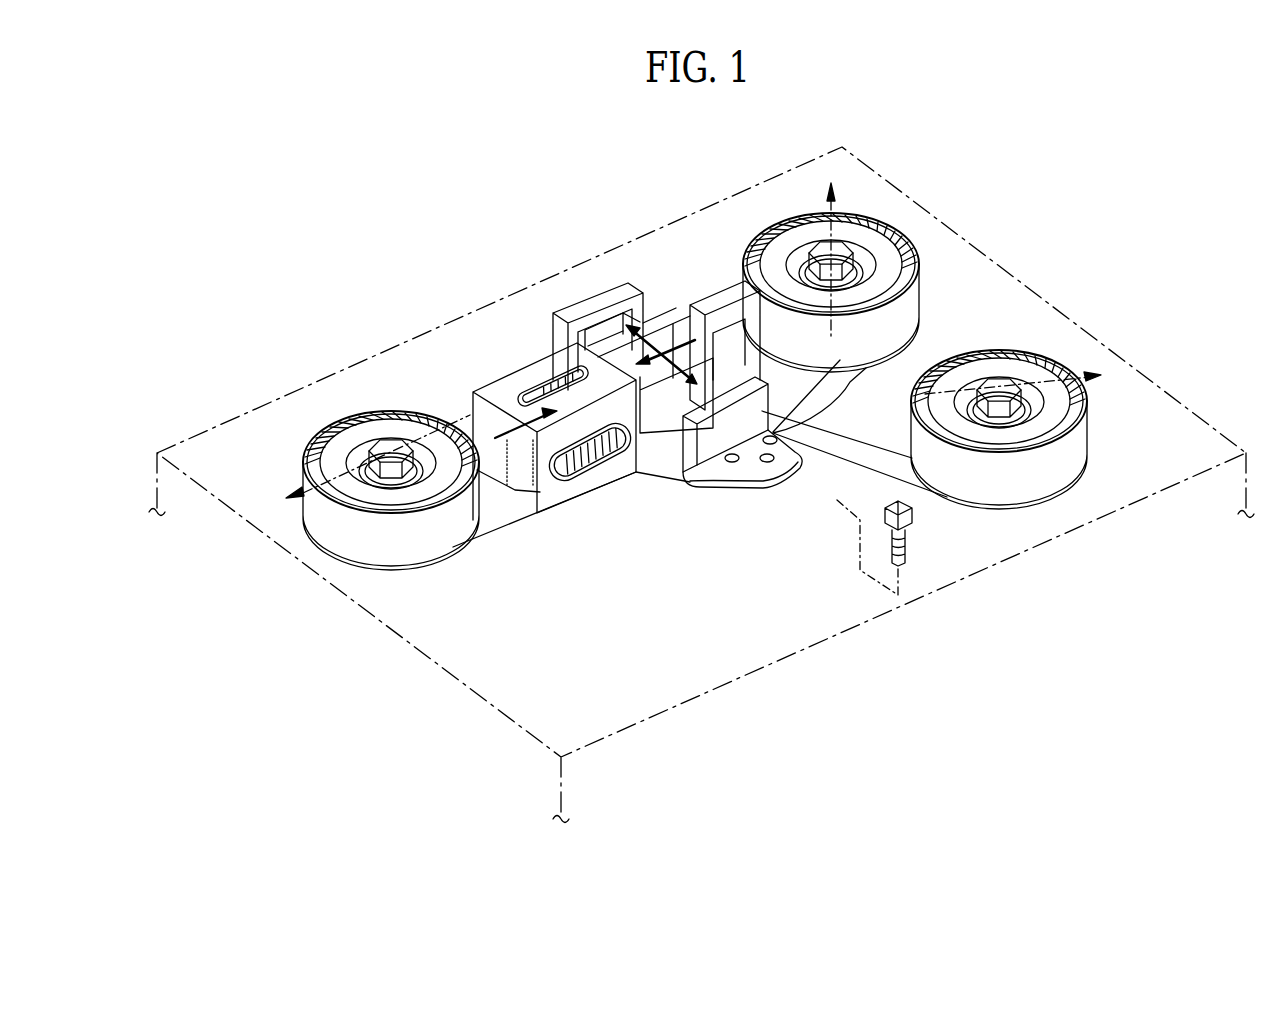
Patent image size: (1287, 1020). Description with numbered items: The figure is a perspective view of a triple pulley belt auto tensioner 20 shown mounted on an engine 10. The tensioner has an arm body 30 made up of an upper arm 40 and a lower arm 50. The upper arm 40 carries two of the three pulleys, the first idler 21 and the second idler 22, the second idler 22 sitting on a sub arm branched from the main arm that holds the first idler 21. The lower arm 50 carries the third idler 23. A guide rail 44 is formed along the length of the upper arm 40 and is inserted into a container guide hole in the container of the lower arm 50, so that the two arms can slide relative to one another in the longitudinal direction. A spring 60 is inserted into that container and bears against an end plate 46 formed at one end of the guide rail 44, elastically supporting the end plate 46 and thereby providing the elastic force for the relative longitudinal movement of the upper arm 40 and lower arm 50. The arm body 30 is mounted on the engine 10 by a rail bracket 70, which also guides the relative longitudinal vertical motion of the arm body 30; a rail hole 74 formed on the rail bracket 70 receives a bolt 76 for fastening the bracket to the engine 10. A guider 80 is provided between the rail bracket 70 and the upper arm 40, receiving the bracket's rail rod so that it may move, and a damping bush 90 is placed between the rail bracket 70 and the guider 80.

The engine 10 is at (1080, 327).
The triple pulley belt auto tensioner 20 is at (693, 365).
The first idler 21 is at (879, 221).
The second idler 22 is at (1000, 352).
The third idler 23 is at (395, 412).
The arm body 30 is at (657, 415).
The upper arm 40 is at (836, 487).
The guide rail 44 is at (554, 388).
The end plate 46 is at (550, 473).
The lower arm 50 is at (620, 503).
The spring 60 is at (580, 467).
The rail bracket 70 is at (596, 294).
The rail hole 74 is at (850, 372).
The bolt 76 is at (908, 543).
The guider 80 is at (703, 335).
The damping bush 90 is at (655, 315).